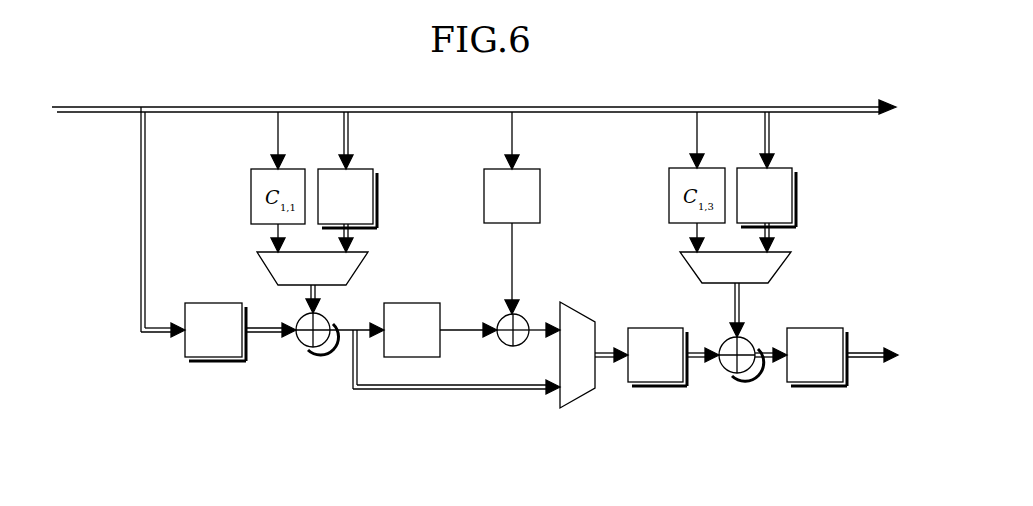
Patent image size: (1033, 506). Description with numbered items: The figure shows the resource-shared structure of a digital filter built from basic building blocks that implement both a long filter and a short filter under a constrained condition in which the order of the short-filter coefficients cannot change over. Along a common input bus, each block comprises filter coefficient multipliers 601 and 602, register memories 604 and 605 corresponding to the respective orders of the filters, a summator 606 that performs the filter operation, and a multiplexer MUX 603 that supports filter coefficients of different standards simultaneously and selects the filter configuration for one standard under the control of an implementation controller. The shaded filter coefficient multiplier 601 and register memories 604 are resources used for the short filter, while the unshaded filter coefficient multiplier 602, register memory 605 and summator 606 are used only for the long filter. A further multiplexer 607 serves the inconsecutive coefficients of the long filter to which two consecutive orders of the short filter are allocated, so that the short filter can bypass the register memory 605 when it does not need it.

The filter coefficient multiplier 601 is at (378, 190).
The filter coefficient multiplier 602 is at (541, 190).
The multiplexer MUX 603 is at (358, 268).
The register memory 604 is at (215, 358).
The register memory 605 is at (418, 357).
The summator 606 is at (316, 350).
The multiplexer 607 is at (585, 400).